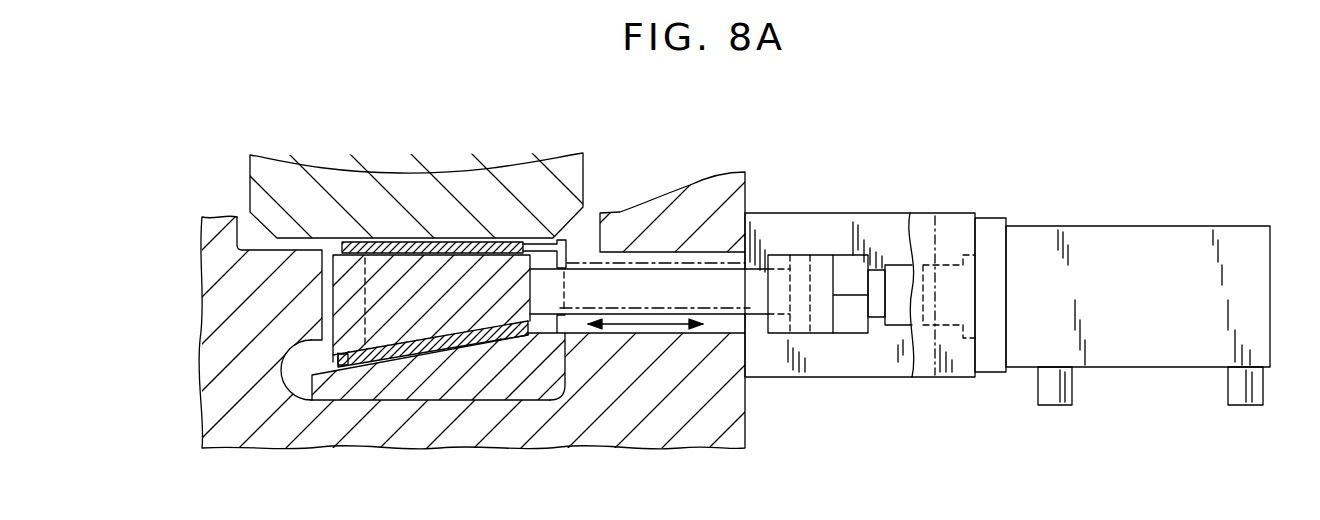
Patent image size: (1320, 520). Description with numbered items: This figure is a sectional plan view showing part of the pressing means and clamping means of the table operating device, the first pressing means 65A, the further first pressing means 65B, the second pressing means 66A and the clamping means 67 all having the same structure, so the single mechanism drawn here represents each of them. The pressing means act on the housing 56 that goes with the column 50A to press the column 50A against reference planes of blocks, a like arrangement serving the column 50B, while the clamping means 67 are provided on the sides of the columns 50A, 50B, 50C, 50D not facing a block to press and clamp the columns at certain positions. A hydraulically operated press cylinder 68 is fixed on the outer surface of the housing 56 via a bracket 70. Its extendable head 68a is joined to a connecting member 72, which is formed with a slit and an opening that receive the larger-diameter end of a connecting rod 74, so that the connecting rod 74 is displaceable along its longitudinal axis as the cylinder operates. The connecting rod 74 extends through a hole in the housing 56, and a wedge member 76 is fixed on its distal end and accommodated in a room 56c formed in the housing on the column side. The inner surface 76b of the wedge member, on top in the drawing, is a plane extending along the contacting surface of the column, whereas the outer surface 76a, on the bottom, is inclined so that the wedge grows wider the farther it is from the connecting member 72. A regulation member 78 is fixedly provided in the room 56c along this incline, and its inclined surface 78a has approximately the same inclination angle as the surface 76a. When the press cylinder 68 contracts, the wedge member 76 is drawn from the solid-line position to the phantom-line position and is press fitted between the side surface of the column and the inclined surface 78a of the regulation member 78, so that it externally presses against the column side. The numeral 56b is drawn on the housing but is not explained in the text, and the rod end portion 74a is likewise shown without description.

The column 50A is at (391, 169).
The column 50B is at (391, 169).
The column 50C is at (391, 169).
The column 50D is at (285, 177).
The housing 56 is at (718, 183).
The housing lower wall 56b is at (712, 325).
The room 56c is at (298, 371).
The first pressing means 65A is at (1007, 289).
The first pressing means 65B is at (1007, 289).
The second pressing means 66A is at (1007, 289).
The clamping means 67 is at (787, 404).
The press cylinder 68 is at (1087, 235).
The extendable head 68a is at (883, 326).
The bracket 70 is at (945, 228).
The connecting member 72 is at (817, 263).
The connecting rod 74 is at (637, 269).
The drive rod end 74a is at (828, 333).
The wedge member 76 is at (343, 360).
The outer surface 76a is at (449, 348).
The inner surface 76b is at (525, 242).
The regulation member 78 is at (501, 373).
The inclined surface 78a is at (529, 336).